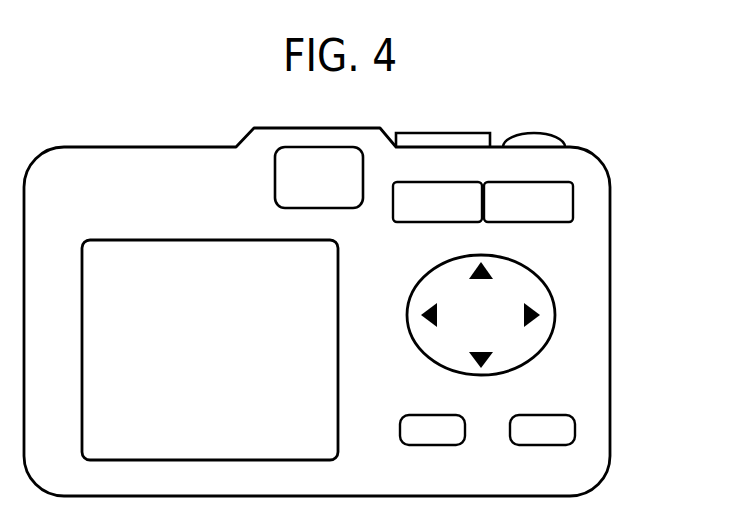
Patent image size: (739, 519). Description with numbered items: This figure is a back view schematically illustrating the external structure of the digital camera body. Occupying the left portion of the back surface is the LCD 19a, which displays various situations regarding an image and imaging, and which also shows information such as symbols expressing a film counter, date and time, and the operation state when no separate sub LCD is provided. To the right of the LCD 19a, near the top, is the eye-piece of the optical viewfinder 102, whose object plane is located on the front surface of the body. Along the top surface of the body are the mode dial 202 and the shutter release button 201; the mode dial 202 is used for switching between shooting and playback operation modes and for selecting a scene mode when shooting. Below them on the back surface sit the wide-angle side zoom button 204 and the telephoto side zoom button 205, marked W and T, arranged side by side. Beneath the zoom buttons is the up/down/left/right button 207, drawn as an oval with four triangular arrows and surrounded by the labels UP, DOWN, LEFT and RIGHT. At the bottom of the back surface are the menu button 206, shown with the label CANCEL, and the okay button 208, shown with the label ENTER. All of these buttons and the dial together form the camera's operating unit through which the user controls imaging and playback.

The LCD 19a is at (108, 240).
The optical viewfinder 102 is at (275, 181).
The shutter release button 201 is at (536, 140).
The mode dial 202 is at (443, 142).
The wide-angle side zoom button 204 is at (410, 223).
The telephoto side zoom button 205 is at (573, 204).
The menu button 206 is at (410, 415).
The up/down/left/right button 207 is at (532, 346).
The okay button 208 is at (575, 428).